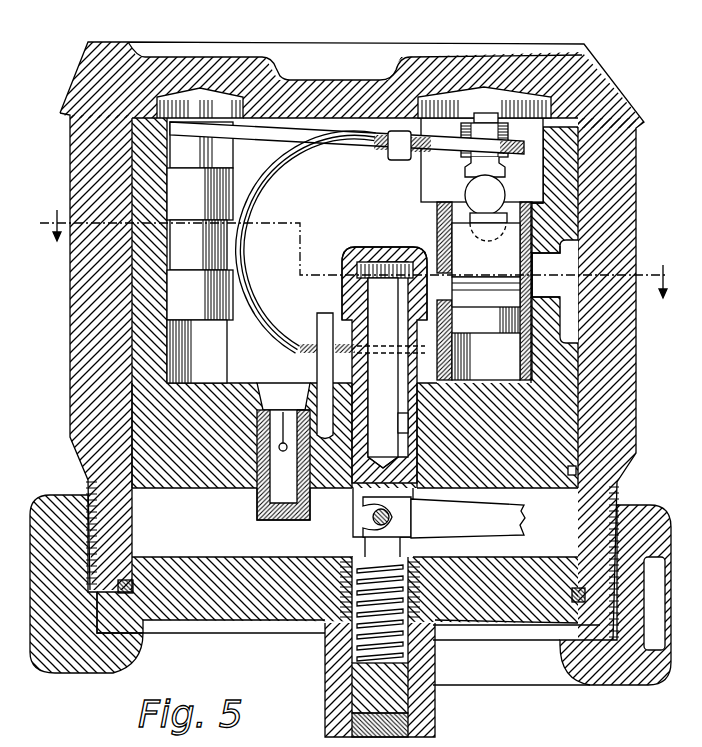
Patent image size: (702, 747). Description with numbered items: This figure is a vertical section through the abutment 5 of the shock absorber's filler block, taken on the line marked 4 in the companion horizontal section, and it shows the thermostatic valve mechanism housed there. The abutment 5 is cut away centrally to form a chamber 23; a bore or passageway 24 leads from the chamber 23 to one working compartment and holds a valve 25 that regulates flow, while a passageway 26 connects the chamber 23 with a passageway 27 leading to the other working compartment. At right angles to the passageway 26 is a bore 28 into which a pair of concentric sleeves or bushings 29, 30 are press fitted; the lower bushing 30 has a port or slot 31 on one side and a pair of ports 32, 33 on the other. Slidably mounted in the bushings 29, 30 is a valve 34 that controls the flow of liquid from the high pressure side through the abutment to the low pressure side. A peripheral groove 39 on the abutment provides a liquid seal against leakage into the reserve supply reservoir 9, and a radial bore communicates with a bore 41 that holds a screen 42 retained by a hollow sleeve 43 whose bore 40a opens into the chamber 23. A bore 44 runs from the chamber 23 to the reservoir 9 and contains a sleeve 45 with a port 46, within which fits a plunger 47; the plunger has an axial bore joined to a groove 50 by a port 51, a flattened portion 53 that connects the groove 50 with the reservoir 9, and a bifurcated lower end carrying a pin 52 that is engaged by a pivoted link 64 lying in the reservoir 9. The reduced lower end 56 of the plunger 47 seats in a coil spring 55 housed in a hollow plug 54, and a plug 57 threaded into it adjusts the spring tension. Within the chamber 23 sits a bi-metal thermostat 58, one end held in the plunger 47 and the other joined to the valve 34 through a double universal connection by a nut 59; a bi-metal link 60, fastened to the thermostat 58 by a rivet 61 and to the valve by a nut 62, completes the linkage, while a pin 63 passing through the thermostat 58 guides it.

The bolt 4 is at (363, 254).
The abutment 5 is at (558, 413).
The auxiliary supply or replenishing reservoir 9 is at (196, 523).
The chamber 23 is at (364, 186).
The bore or passageway 24 is at (162, 217).
The valve 25 is at (200, 235).
The passageway 26 is at (560, 247).
The passageway 27 is at (570, 313).
The bore or passageway 28 is at (535, 210).
The sleeve or bushing 29 is at (447, 202).
The sleeve or bushing 30 is at (531, 357).
The port or slot 31 is at (532, 270).
The port 32 is at (425, 253).
The port 33 is at (455, 354).
The valve 34 is at (486, 254).
The peripheral groove or passageway 39 is at (576, 471).
The bore 40a is at (277, 407).
The bore 41 is at (257, 432).
The screen 42 is at (293, 407).
The hollow sleeve 43 is at (257, 470).
The bore 44 is at (410, 450).
The sleeve 45 is at (364, 248).
The port 46 is at (345, 333).
The plunger 47 is at (342, 296).
The groove 50 is at (417, 461).
The port 51 is at (412, 418).
The pin 52 is at (373, 518).
The flattened portion 53 is at (363, 500).
The hollow plug 54 is at (433, 700).
The coil spring 55 is at (436, 650).
The reduced lower end 56 is at (400, 552).
The plug 57 is at (362, 697).
The bi-metal thermostat 58 is at (262, 203).
The nut 59 is at (488, 113).
The bi-metal link 60 is at (277, 137).
The rivet 61 is at (401, 131).
The nut 62 is at (236, 108).
The pin 63 is at (285, 405).
The link 64 is at (468, 518).